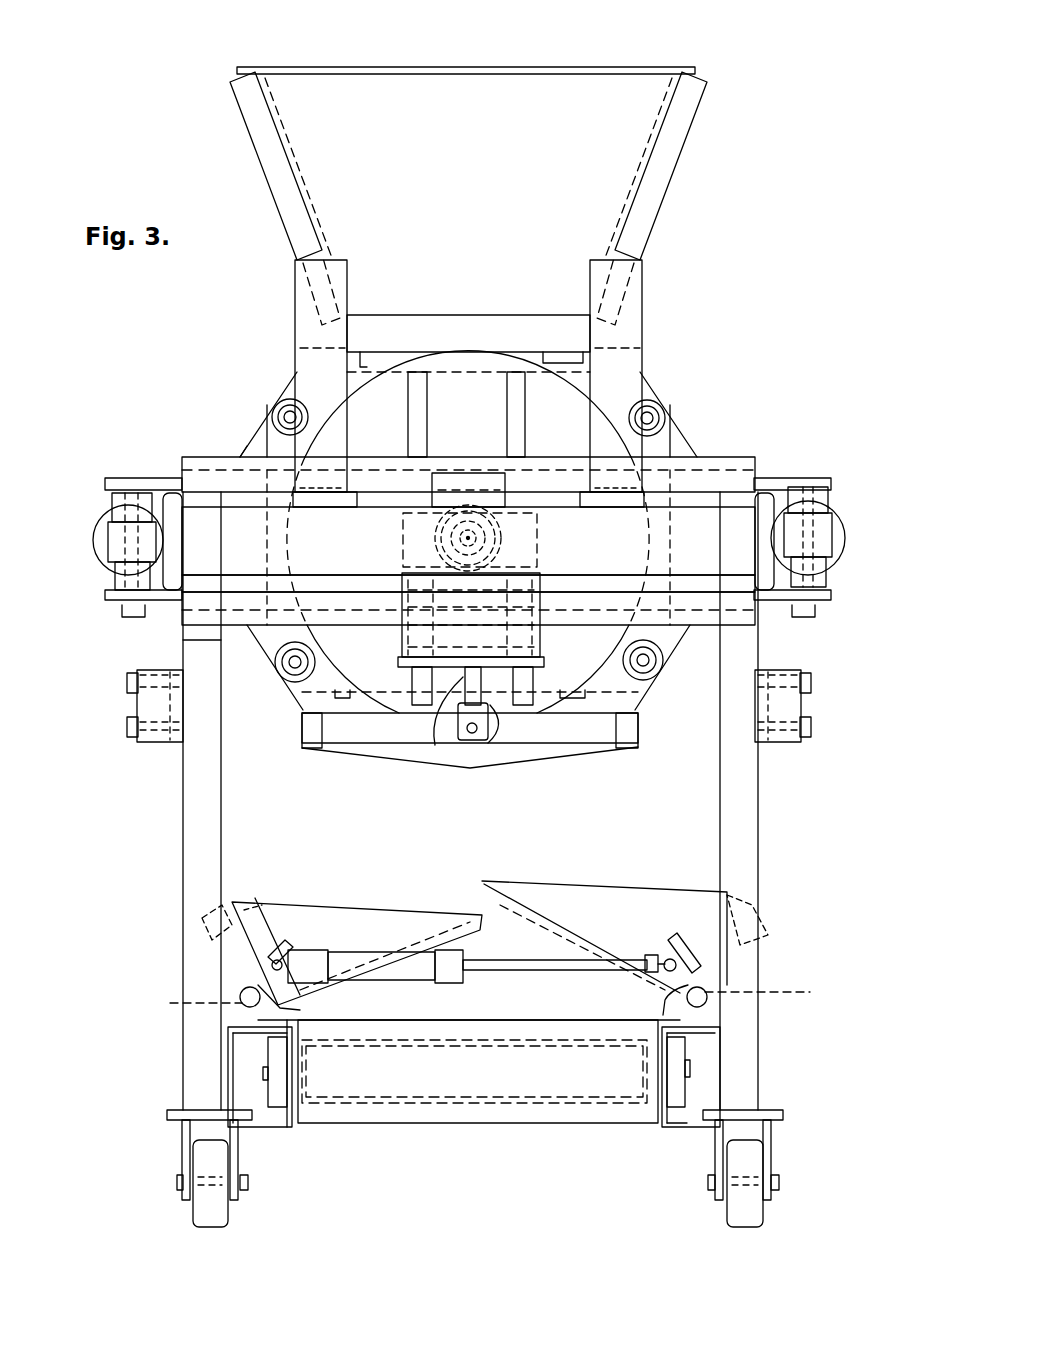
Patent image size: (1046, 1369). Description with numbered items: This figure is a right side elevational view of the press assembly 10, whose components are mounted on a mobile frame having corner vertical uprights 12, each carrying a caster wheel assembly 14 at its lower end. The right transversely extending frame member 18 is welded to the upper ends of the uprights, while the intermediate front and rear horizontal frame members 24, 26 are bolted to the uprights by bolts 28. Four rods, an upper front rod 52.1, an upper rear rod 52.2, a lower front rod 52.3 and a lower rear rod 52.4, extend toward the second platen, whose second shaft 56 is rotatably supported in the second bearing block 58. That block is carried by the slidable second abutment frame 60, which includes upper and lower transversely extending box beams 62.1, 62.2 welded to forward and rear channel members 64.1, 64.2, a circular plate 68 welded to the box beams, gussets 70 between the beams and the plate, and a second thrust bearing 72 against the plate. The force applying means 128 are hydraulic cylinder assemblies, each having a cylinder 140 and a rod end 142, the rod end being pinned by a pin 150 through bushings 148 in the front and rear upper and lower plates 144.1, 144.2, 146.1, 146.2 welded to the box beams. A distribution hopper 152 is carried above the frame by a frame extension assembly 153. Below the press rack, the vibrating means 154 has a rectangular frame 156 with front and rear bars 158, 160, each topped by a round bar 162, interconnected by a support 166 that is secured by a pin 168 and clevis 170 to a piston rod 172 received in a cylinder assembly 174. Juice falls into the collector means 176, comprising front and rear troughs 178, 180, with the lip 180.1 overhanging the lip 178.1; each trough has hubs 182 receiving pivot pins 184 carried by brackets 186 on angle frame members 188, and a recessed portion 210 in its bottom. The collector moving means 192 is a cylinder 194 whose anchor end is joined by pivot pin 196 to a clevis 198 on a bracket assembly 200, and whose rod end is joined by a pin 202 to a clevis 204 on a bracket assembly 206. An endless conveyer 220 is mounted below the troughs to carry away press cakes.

The press assembly 10 is at (790, 112).
The vertical uprights 12 is at (182, 830).
The caster wheel assembly 14 is at (175, 1208).
The right transversely extending frame member 18 is at (292, 556).
The intermediate front horizontal frame member 24 is at (137, 708).
The intermediate rear horizontal frame member 26 is at (801, 695).
The bolts 28 is at (127, 683).
The upper front rod 52.1 is at (282, 412).
The upper rear rod 52.2 is at (660, 410).
The lower front rod 52.3 is at (280, 676).
The lower rear rod 52.4 is at (660, 675).
The second shaft 56 is at (503, 538).
The second bearing block 58 is at (425, 546).
The second abutment frame 60 is at (690, 355).
The upper transversely extending box beam 62.1 is at (238, 458).
The lower transversely extending box beam 62.2 is at (200, 641).
The forward channel member 64.1 is at (183, 470).
The rear channel member 64.2 is at (760, 470).
The circular plate 68 is at (376, 352).
The gussets 70 is at (507, 398).
The second thrust bearing 72 is at (556, 357).
The force applying means 128 is at (469, 474).
The cylinder 140 is at (108, 525).
The rod end 142 is at (118, 540).
The front upper plate 144.1 is at (140, 475).
The front lower plate 144.2 is at (125, 617).
The rear upper plate 146.1 is at (795, 475).
The rear lower plate 146.2 is at (790, 605).
The bushings 148 is at (112, 497).
The pin 150 is at (110, 478).
The distribution hopper 152 is at (447, 64).
The frame extension assembly 153 is at (293, 266).
The vibrating means 154 is at (475, 748).
The rectangular frame 156 is at (400, 768).
The front bar 158 is at (298, 745).
The rear bar 160 is at (640, 740).
The round bar 162 is at (300, 725).
The right transversely extending support 166 is at (535, 755).
The pin 168 is at (465, 745).
The clevis 170 is at (497, 745).
The piston rod 172 is at (440, 750).
The cylinder assembly 174 is at (472, 465).
The collector means 176 is at (481, 959).
The front trough 178 is at (380, 905).
The lip of front trough 178.1 is at (460, 915).
The rear trough 180 is at (606, 885).
The lip of rear trough 180.1 is at (482, 882).
The concentric hubs 182 is at (245, 985).
The pivot pins 184 is at (245, 1000).
The brackets 186 is at (228, 1040).
The angle frame members 188 is at (232, 1066).
The collector moving means 192 is at (480, 996).
The cylinder 194 is at (388, 985).
The pivot pin 196 is at (282, 958).
The clevis 198 is at (270, 905).
The bracket assembly 200 is at (215, 935).
The pin 202 is at (655, 940).
The clevis 204 is at (668, 958).
The bracket assembly 206 is at (740, 938).
The recessed portion 210 is at (285, 1003).
The endless conveyer 220 is at (412, 1118).